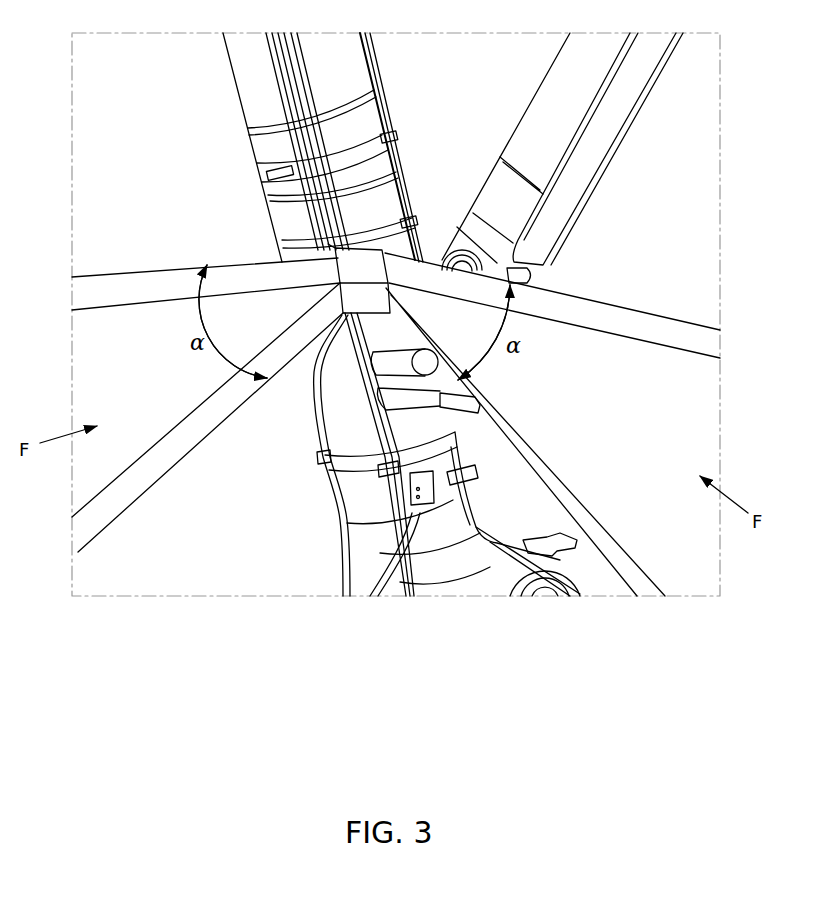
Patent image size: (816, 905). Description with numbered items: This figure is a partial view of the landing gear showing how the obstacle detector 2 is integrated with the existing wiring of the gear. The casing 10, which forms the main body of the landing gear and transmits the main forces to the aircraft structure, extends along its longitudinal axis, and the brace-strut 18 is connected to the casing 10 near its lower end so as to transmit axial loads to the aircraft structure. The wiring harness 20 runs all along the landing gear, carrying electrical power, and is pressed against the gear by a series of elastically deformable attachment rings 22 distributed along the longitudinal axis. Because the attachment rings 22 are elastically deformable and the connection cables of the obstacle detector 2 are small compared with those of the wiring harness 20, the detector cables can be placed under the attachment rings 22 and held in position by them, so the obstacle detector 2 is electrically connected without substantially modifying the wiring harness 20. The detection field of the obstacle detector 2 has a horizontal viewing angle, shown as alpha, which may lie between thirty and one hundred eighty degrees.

The obstacle detector 2 is at (337, 251).
The casing 10 is at (250, 77).
The brace-strut 18 is at (557, 68).
The wiring harness 20 is at (302, 94).
The attachment rings 22 is at (421, 205).